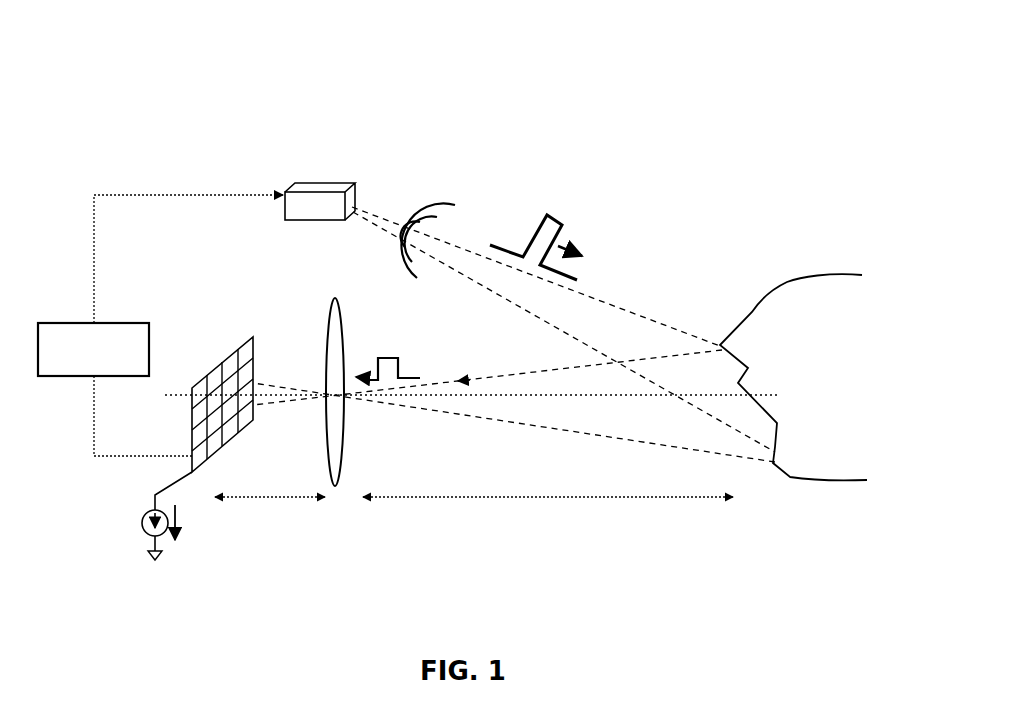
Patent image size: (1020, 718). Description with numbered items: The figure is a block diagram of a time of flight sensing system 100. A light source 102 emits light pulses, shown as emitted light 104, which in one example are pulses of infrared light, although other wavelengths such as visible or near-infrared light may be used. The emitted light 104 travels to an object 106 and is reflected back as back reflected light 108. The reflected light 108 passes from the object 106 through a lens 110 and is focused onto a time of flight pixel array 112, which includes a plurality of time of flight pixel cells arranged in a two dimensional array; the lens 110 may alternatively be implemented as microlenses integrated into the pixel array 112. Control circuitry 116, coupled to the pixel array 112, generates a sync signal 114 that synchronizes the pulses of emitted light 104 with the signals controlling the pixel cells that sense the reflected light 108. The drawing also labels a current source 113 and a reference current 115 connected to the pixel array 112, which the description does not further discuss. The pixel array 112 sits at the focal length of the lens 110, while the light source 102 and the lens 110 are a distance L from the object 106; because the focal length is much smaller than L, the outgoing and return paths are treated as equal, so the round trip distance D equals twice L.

The time of flight sensing system 100 is at (831, 41).
The light source 102 is at (365, 192).
The emitted light 104 is at (540, 210).
The object 106 is at (758, 300).
The back reflected light 108 is at (385, 352).
The lens 110 is at (318, 310).
The time of flight pixel array 112 is at (190, 357).
The current source 113 is at (142, 518).
The sync signal 114 is at (115, 185).
The reference current IREF 115 is at (202, 526).
The control circuitry 116 is at (72, 323).